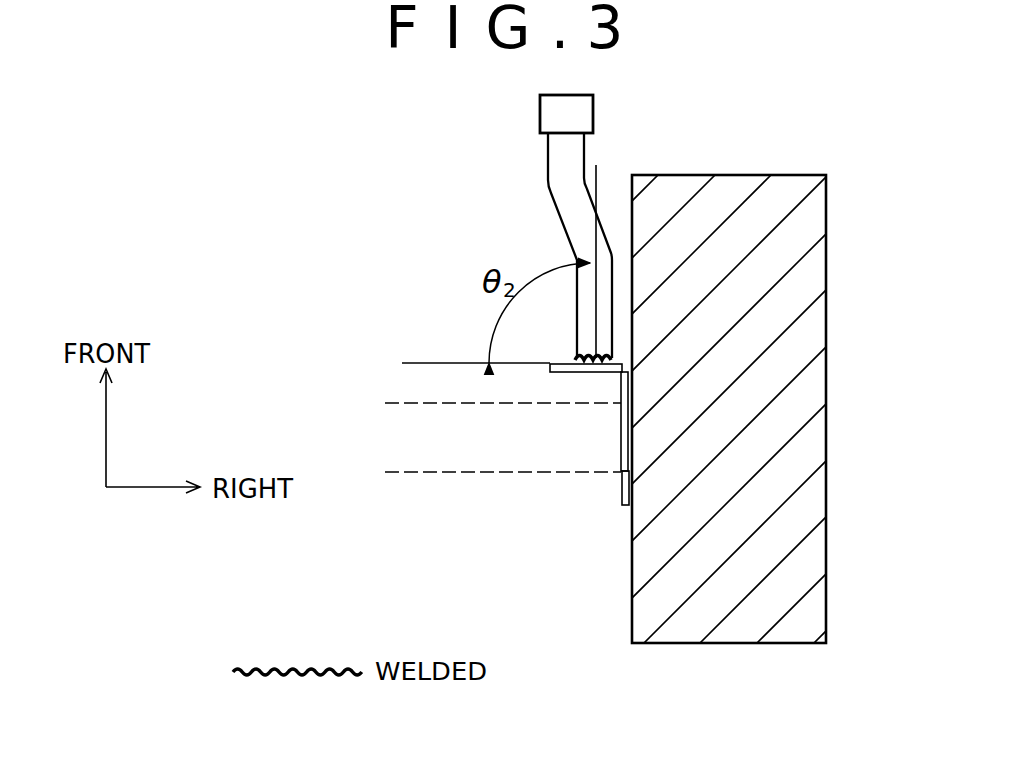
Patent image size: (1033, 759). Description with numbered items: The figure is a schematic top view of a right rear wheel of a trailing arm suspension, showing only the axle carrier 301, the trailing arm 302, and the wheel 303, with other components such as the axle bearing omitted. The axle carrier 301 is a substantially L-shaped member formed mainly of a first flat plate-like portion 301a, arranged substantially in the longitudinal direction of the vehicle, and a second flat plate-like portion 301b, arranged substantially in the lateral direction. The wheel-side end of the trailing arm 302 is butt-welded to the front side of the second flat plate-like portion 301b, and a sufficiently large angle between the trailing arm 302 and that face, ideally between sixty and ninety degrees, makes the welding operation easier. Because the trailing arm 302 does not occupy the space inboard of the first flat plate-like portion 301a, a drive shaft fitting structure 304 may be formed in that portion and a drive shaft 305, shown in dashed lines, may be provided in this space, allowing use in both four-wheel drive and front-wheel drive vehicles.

The trailing arm 302 is at (553, 161).
The second flat plate-like portion 301b is at (552, 371).
The axle carrier 301 is at (566, 381).
The first flat plate-like portion 301a is at (623, 507).
The drive shaft fitting structure 304 is at (626, 467).
The drive shaft 305 is at (415, 475).
The wheel 303 is at (727, 645).